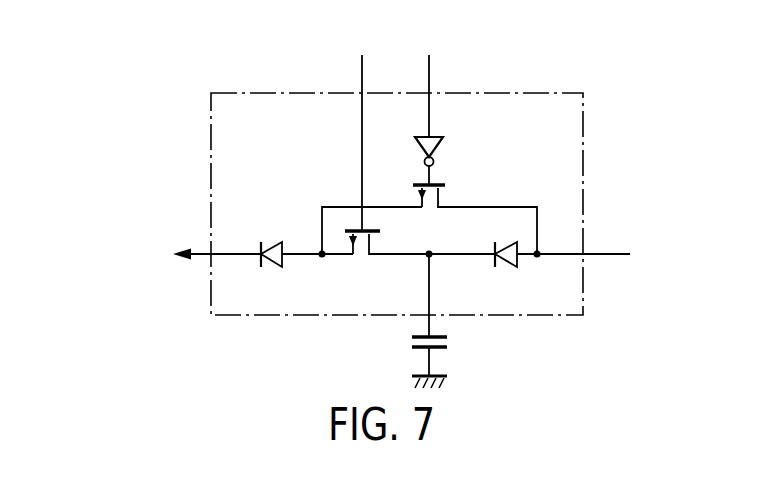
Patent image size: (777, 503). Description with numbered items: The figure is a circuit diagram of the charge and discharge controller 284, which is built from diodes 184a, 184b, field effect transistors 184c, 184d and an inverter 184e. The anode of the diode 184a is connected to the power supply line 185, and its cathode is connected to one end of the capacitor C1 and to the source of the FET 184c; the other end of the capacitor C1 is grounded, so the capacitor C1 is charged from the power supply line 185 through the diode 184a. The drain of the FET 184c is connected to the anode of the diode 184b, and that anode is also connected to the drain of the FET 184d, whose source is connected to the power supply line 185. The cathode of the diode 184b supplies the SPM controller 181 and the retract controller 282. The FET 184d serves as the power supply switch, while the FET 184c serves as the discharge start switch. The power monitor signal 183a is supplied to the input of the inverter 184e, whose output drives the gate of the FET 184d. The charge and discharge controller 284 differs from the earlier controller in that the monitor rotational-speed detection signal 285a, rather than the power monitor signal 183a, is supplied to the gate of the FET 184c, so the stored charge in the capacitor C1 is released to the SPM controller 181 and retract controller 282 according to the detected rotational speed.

The charge and discharge controller 284 is at (584, 120).
The monitor rotational-speed detection signal 285a is at (361, 80).
The power monitor signal 183a is at (430, 78).
The inverter 184e is at (437, 152).
The field effect transistor 184d is at (430, 210).
The field effect transistor 184c is at (360, 257).
The diode 184b is at (268, 268).
The diode 184a is at (504, 268).
The power supply line 185 is at (603, 257).
The capacitor C1 is at (448, 340).
The SPM controller 181 is at (116, 225).
The retract controller 282 is at (117, 273).